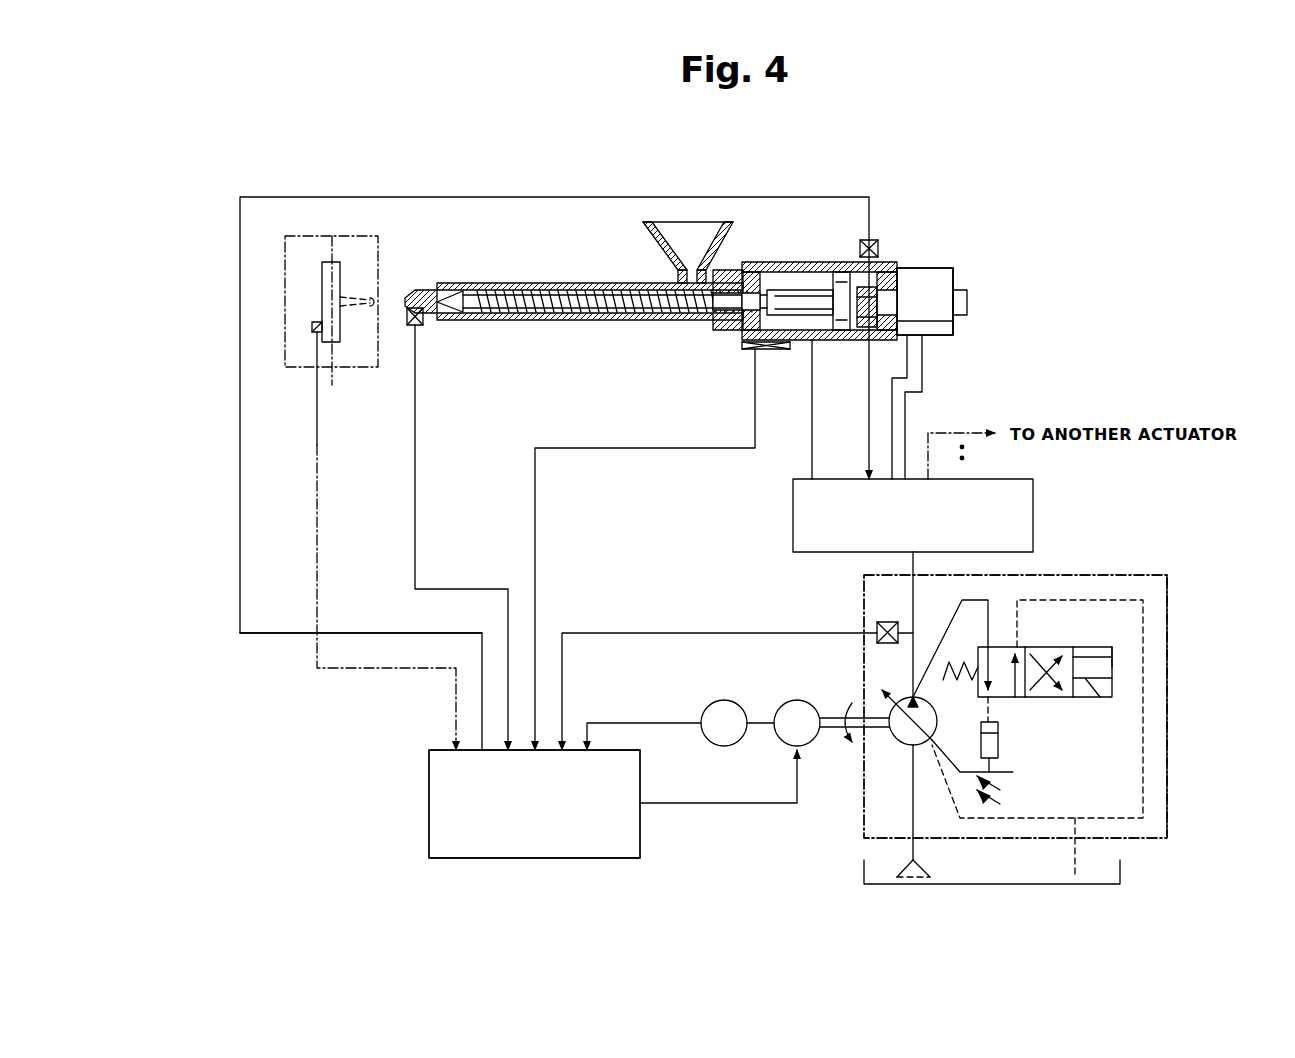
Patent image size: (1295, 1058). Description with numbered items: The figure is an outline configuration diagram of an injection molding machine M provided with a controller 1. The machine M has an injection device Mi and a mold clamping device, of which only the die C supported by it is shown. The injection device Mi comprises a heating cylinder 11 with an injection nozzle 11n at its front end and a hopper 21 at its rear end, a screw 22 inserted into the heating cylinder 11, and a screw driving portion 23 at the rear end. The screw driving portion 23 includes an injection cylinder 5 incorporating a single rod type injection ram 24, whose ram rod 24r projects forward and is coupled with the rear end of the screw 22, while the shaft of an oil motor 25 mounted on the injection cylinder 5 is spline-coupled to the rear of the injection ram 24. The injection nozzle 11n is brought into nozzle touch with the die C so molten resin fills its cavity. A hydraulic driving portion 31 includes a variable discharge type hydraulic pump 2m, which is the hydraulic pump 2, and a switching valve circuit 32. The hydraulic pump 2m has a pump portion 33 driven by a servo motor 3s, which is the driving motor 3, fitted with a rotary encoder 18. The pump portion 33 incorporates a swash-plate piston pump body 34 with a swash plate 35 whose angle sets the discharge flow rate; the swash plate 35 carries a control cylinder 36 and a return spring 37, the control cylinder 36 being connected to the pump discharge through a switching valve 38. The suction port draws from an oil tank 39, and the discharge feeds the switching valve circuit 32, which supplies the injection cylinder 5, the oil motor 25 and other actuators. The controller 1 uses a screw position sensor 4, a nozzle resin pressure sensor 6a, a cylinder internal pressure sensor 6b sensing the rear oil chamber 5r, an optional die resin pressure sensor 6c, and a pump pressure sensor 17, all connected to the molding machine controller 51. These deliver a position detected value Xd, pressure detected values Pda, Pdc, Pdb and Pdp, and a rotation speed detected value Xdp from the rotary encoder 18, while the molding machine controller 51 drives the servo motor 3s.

The controller 1 is at (388, 806).
The hydraulic pump 2 is at (1174, 629).
The variable discharge type hydraulic pump 2m is at (1090, 571).
The driving motor 3 is at (780, 697).
The servo motor 3s is at (808, 699).
The screw position sensor 4 is at (745, 349).
The injection cylinder 5 is at (822, 262).
The rear oil chamber 5r is at (863, 330).
The nozzle resin pressure sensor 6a is at (424, 323).
The cylinder internal pressure sensor 6b is at (885, 238).
The die resin pressure sensor 6c is at (315, 325).
The heating cylinder 11 is at (538, 322).
The injection nozzle 11n is at (414, 290).
The pump pressure sensor 17 is at (882, 622).
The rotary encoder 18 is at (717, 699).
The hopper 21 is at (657, 230).
The screw 22 is at (540, 283).
The screw driving portion 23 is at (970, 328).
The injection ram 24 is at (843, 262).
The ram rod 24r is at (803, 340).
The oil motor 25 is at (957, 282).
The hydraulic driving portion 31 is at (1195, 538).
The switching valve circuit 32 is at (1035, 517).
The pump portion 33 is at (1170, 740).
The pump body 34 is at (902, 747).
The swash plate 35 is at (1012, 770).
The control cylinder 36 is at (1000, 740).
The return spring 37 is at (1003, 785).
The switching valve 38 is at (1048, 647).
The oil tank 39 is at (1120, 862).
The molding machine controller 51 is at (428, 770).
The die C is at (337, 386).
The injection molding machine M is at (982, 196).
The injection device Mi is at (1000, 266).
The pressure detected value Pda is at (416, 513).
The pressure detected value Pdb is at (262, 633).
The pressure detected value Pdc is at (319, 583).
The pressure detected value Pdp is at (626, 629).
The position detected value Xd is at (658, 450).
The rotation speed detected value Xdp is at (615, 720).